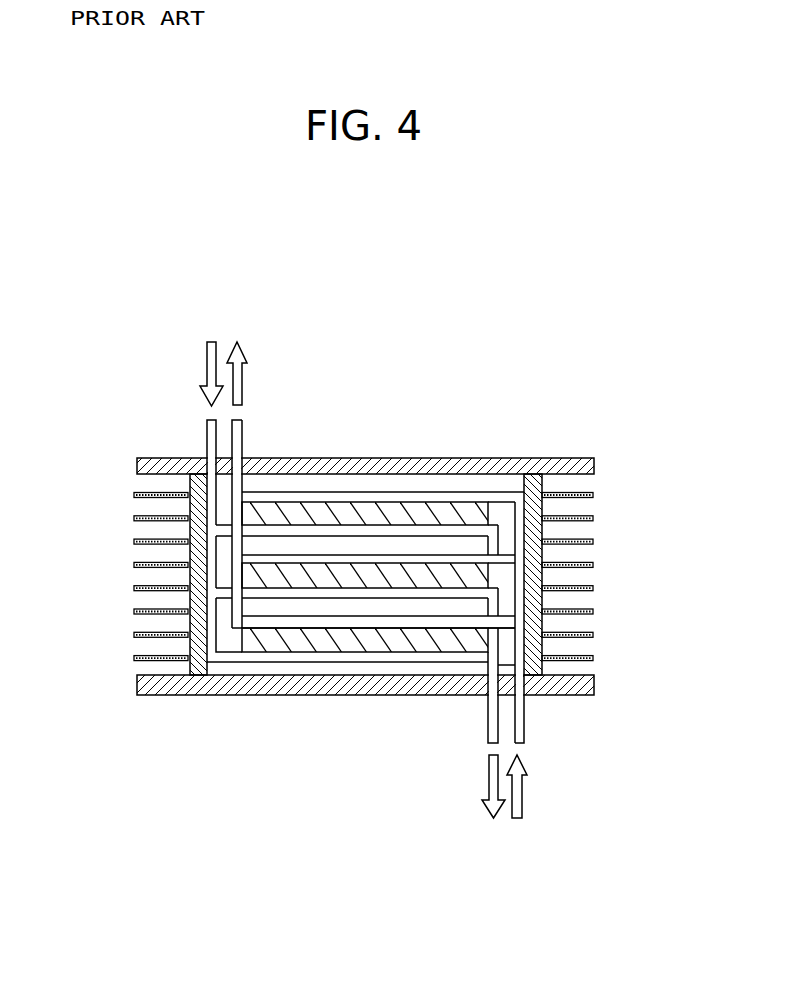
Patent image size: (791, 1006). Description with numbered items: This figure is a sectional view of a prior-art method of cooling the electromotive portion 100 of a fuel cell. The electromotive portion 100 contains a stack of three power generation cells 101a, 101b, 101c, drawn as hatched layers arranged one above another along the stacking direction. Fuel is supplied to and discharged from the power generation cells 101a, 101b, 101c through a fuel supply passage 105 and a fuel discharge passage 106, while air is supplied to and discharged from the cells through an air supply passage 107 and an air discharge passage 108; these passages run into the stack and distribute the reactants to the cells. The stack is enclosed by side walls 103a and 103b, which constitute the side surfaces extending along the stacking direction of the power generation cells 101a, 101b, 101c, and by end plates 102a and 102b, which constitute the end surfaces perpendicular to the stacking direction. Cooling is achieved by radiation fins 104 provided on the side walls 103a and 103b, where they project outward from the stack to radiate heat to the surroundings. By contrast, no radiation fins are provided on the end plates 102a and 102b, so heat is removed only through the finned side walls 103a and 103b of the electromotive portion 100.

The electromotive portion 100 is at (523, 392).
The power generation cell 101a is at (337, 513).
The power generation cell 101b is at (347, 580).
The power generation cell 101c is at (315, 645).
The end plate 102a is at (570, 458).
The end plate 102b is at (179, 688).
The side wall 103a is at (202, 489).
The side wall 103b is at (537, 490).
The radiation fins 104 is at (131, 488).
The fuel supply passage 105 is at (527, 660).
The fuel discharge passage 106 is at (240, 512).
The air supply passage 107 is at (208, 447).
The air discharge passage 108 is at (488, 648).